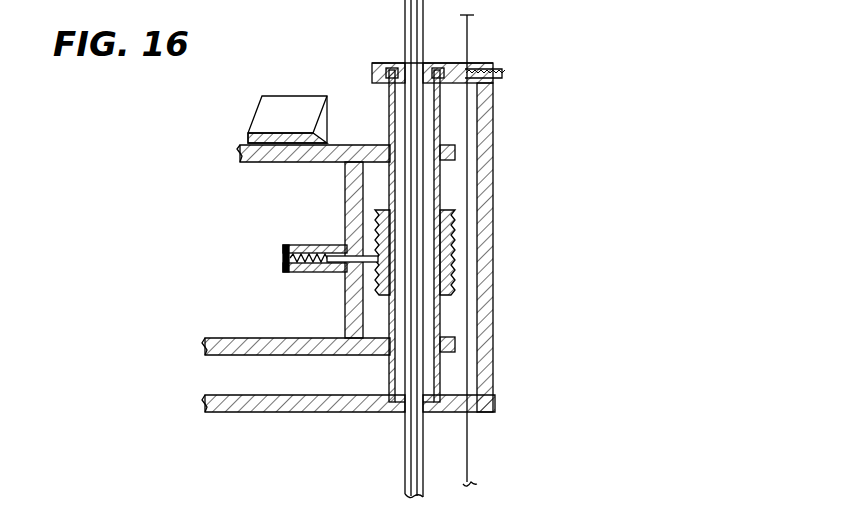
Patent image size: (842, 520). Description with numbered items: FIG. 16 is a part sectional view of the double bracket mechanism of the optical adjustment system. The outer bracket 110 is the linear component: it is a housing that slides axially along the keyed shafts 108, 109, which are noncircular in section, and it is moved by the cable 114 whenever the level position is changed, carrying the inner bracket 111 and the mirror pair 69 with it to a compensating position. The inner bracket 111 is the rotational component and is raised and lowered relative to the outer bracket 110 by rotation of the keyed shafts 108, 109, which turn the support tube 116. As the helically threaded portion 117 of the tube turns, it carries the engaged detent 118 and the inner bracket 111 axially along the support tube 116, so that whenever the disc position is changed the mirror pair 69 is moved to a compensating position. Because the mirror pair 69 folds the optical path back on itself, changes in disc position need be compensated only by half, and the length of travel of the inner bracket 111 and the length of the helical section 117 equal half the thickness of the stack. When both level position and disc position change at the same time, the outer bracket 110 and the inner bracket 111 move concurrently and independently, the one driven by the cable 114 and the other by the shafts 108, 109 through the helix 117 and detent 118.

The mirror pair 69 is at (262, 104).
The keyed shaft 108 is at (405, 22).
The keyed shaft 109 is at (388, 248).
The outer bracket 110 is at (493, 152).
The inner bracket 111 is at (350, 213).
The cable 114 is at (470, 18).
The support tube 116 is at (388, 118).
The helically threaded portion 117 is at (452, 272).
The detent 118 is at (340, 268).